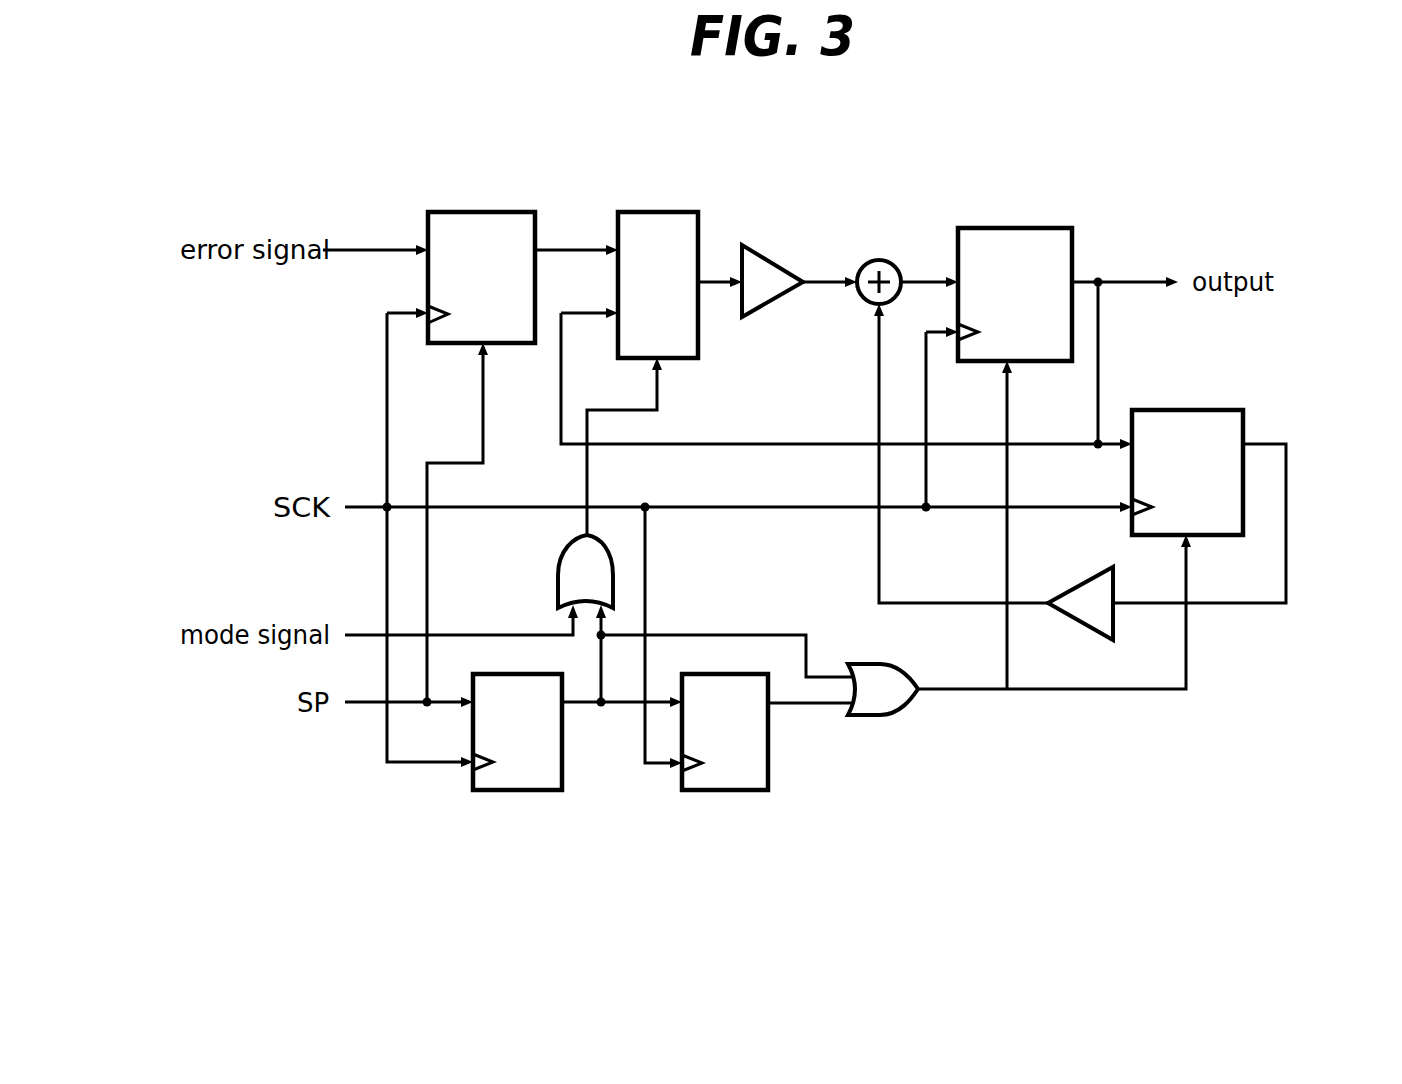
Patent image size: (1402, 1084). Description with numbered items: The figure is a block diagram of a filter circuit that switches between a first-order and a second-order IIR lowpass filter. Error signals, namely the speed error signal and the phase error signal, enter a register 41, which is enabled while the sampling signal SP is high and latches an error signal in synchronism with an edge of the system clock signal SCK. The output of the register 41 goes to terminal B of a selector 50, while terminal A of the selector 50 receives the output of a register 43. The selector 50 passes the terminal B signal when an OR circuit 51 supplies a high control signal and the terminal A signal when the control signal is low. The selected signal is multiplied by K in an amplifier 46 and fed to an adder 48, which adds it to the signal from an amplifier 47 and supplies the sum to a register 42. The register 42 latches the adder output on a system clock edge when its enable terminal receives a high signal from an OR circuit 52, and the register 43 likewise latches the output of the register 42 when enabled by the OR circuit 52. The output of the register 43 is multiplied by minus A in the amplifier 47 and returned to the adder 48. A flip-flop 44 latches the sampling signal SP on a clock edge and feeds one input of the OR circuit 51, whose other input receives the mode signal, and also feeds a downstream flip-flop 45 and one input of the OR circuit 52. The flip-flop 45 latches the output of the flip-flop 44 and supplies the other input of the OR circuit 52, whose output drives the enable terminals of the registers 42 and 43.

The register 41 is at (483, 212).
The selector 50 is at (657, 212).
The amplifier 46 is at (782, 262).
The adder 48 is at (860, 302).
The register 42 is at (1022, 228).
The register 43 is at (1192, 410).
The amplifier 47 is at (1085, 583).
The OR circuit 51 is at (558, 585).
The OR circuit 52 is at (862, 662).
The flip-flop 44 is at (526, 790).
The flip-flop 45 is at (770, 768).